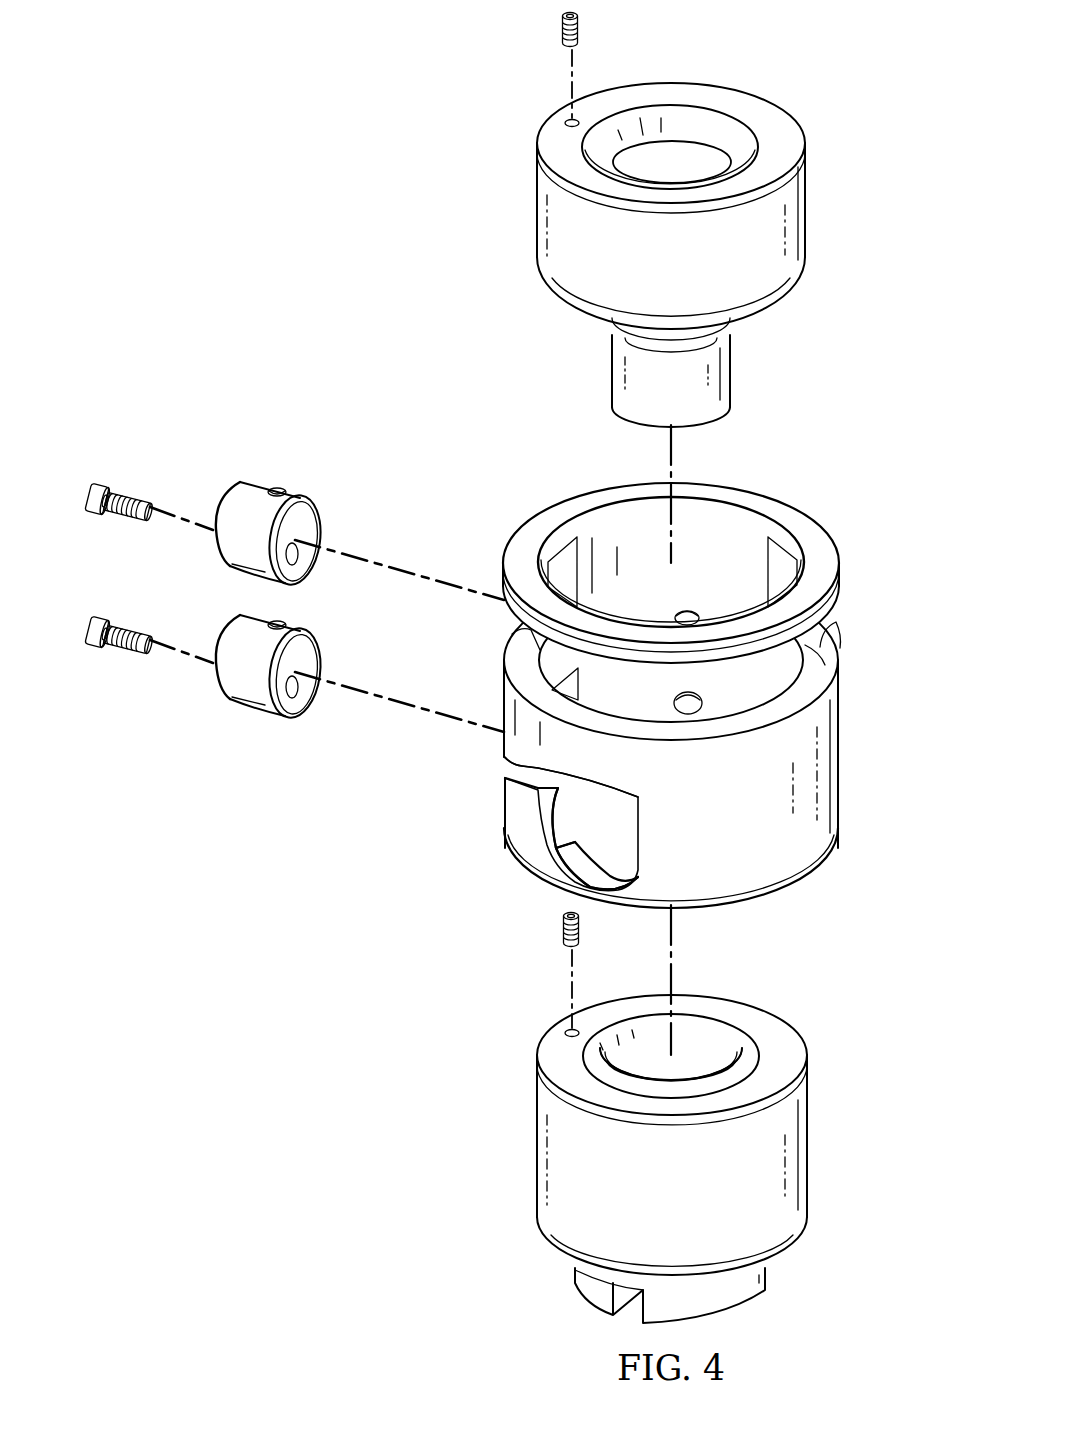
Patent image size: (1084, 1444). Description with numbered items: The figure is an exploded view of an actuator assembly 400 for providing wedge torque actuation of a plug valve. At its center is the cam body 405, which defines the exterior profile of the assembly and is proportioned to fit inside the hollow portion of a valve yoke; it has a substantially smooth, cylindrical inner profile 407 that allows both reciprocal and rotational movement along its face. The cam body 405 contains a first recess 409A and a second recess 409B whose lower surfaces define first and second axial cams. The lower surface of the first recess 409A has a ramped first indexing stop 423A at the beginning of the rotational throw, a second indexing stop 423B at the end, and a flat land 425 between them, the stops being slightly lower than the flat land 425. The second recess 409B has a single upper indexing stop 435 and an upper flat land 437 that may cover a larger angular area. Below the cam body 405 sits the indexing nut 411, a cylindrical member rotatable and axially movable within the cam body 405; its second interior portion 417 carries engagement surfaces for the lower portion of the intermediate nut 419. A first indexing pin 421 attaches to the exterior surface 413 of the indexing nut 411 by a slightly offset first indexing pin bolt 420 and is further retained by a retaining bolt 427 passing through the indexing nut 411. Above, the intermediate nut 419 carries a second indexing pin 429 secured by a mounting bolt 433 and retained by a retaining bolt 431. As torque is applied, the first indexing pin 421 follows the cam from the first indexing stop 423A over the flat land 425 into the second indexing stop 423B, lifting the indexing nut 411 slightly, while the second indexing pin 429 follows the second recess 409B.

The actuator assembly 400 is at (276, 109).
The retaining bolt 431 is at (582, 25).
The intermediate nut 419 is at (805, 200).
The cylindrical inner profile 407 is at (742, 528).
The cam body 405 is at (838, 765).
The first recess 409A is at (512, 758).
The second recess 409B is at (823, 633).
The upper indexing stop 435 is at (533, 638).
The upper flat land 437 is at (822, 660).
The first indexing stop 423A is at (527, 768).
The second indexing stop 423B is at (566, 880).
The flat land 425 is at (540, 830).
The mounting bolt 433 is at (130, 498).
The second indexing pin 429 is at (268, 483).
The first indexing pin bolt 420 is at (126, 650).
The first indexing pin 421 is at (255, 712).
The retaining bolt 427 is at (560, 928).
The indexing nut 411 is at (806, 1148).
The second interior portion 417 is at (720, 1040).
The exterior surface 413 is at (545, 1163).